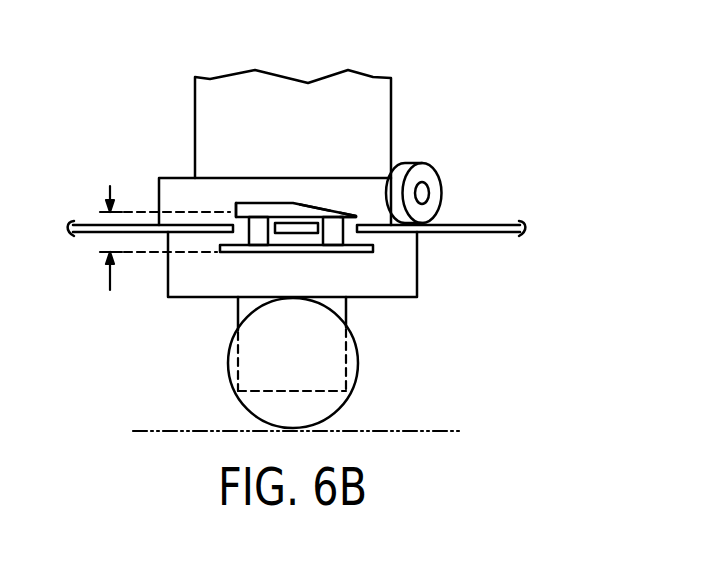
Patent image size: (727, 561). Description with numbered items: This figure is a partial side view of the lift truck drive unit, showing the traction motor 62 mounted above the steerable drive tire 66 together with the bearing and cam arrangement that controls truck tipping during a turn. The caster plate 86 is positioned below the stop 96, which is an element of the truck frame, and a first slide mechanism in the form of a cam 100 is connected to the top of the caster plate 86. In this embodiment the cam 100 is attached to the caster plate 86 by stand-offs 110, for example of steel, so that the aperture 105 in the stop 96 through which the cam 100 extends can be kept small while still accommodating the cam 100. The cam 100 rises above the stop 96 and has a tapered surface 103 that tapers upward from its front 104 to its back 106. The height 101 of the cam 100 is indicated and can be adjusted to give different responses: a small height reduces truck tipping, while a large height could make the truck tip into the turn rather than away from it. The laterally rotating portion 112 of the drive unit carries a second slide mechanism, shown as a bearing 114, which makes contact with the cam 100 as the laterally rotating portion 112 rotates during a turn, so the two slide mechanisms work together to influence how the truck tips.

The traction motor 62 is at (259, 115).
The laterally rotating portion 112 is at (159, 203).
The caster plate 86 is at (373, 246).
The stop 96 is at (485, 224).
The cam 100 is at (282, 206).
The back 106 is at (236, 207).
The tapered surface 103 is at (322, 205).
The front 104 is at (354, 216).
The stand-offs 110 is at (334, 240).
The aperture 105 is at (354, 235).
The bearing 114 is at (422, 170).
The height 101 is at (110, 188).
The drive tire 66 is at (323, 401).